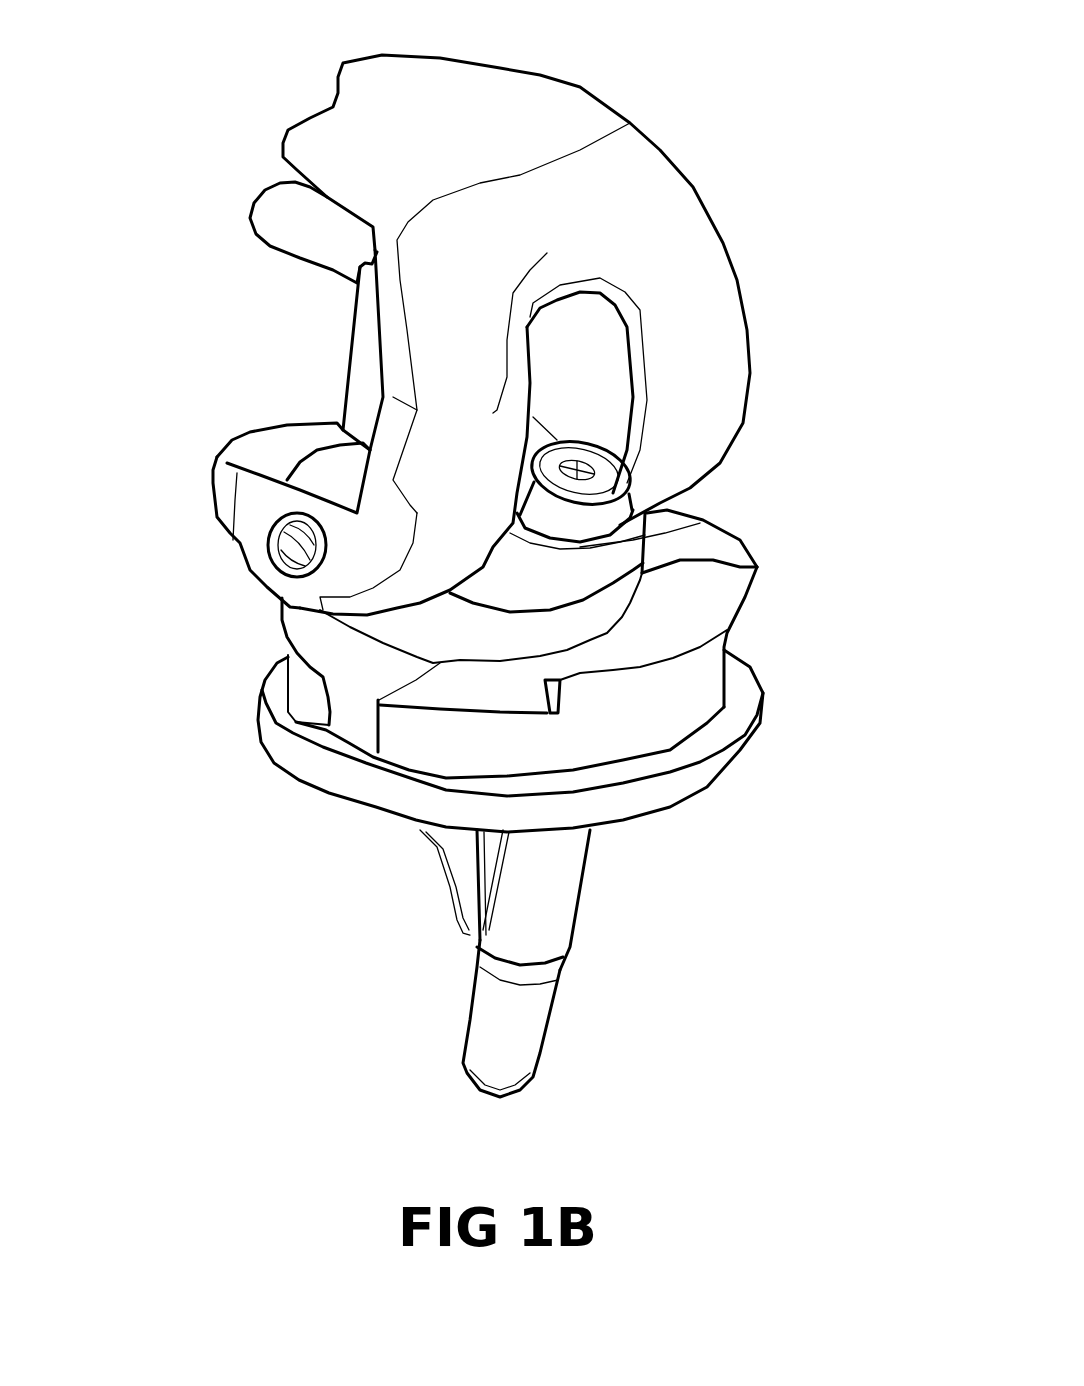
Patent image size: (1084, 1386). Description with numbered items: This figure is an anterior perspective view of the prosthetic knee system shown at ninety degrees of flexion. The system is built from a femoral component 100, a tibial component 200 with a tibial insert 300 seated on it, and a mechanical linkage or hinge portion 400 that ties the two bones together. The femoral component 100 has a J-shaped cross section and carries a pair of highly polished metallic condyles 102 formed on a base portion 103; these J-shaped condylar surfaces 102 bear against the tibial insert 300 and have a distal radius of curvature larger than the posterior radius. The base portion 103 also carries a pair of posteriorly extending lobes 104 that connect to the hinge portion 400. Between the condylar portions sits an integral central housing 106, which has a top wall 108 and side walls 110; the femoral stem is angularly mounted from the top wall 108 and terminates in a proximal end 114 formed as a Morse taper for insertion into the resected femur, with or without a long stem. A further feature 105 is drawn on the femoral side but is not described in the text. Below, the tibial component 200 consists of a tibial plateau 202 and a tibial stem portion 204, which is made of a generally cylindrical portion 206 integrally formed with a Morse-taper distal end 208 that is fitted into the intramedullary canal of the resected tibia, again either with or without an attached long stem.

The femoral component 100 is at (520, 313).
The condyles 102 is at (590, 362).
The base portion 103 is at (258, 467).
The posteriorly extending lobes 104 is at (233, 591).
The fixation hole 105 is at (231, 560).
The central housing 106 is at (259, 350).
The top wall 108 is at (383, 318).
The side walls 110 is at (276, 490).
The proximal end 114 is at (265, 215).
The tibial component 200 is at (552, 873).
The tibial plateau 202 is at (552, 741).
The tibial stem portion 204 is at (567, 971).
The generally cylindrical portion 206 is at (551, 900).
The distal end 208 is at (548, 1018).
The tibial insert 300 is at (567, 669).
The hinge portion 400 is at (677, 503).